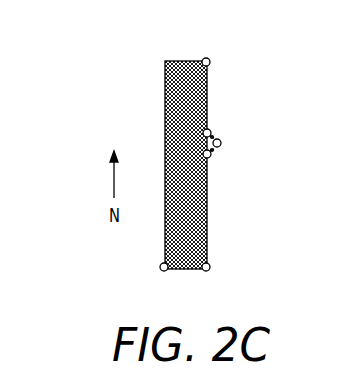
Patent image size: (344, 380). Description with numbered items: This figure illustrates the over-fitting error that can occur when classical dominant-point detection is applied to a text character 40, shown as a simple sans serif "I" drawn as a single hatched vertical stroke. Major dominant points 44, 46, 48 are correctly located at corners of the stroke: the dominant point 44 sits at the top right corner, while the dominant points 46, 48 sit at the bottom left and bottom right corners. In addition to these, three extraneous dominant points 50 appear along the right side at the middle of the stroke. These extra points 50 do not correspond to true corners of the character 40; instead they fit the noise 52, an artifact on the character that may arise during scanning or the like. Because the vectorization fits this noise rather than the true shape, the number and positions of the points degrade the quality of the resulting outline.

The text character 40 is at (100, 100).
The dominant point 44 is at (209, 58).
The dominant point 46 is at (162, 271).
The dominant point 48 is at (208, 271).
The extraneous dominant points 50 is at (209, 129).
The noise 52 is at (214, 152).